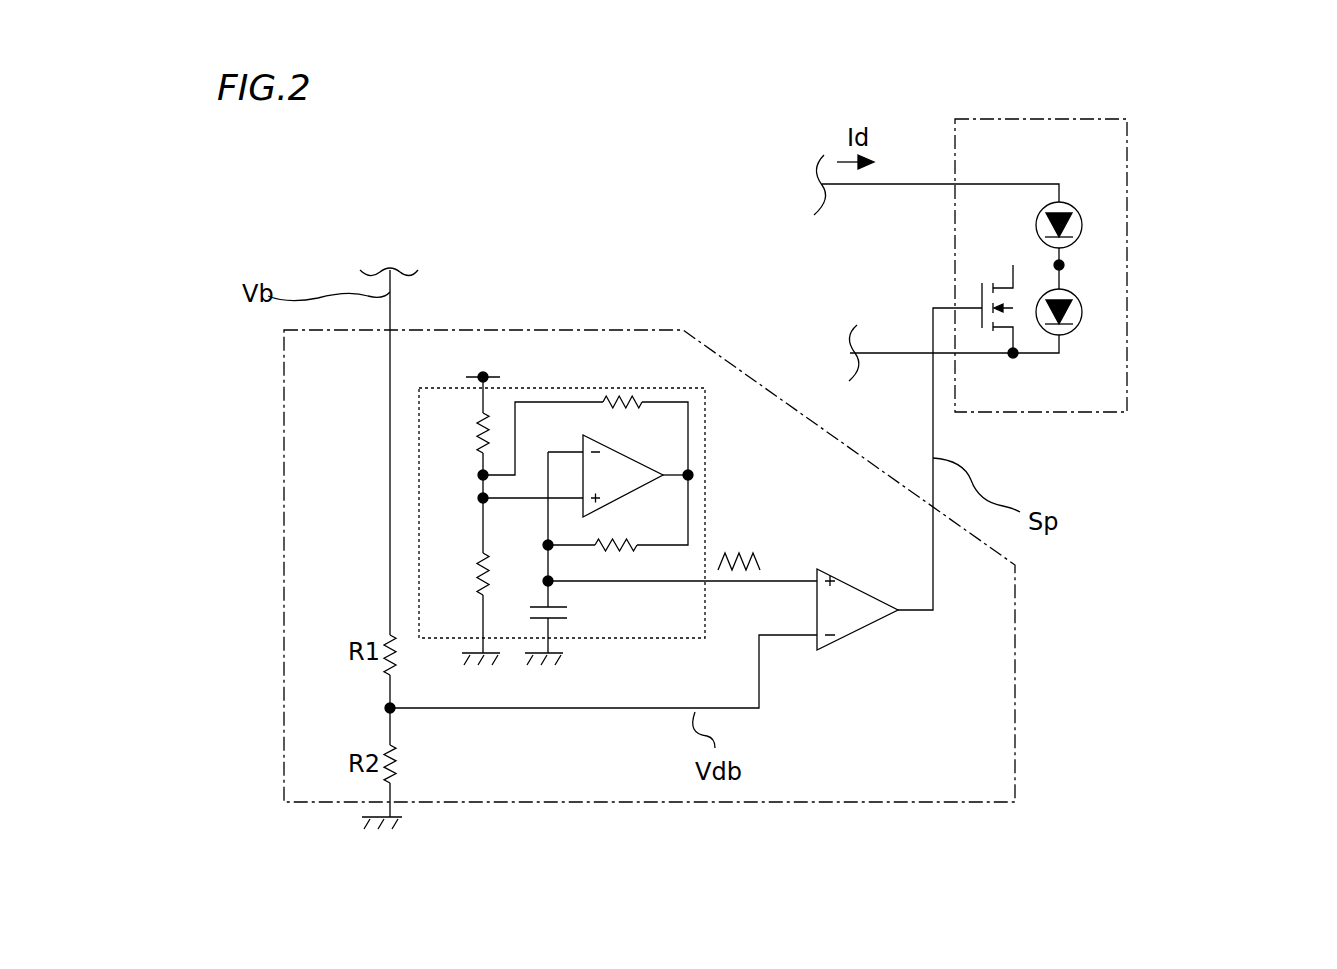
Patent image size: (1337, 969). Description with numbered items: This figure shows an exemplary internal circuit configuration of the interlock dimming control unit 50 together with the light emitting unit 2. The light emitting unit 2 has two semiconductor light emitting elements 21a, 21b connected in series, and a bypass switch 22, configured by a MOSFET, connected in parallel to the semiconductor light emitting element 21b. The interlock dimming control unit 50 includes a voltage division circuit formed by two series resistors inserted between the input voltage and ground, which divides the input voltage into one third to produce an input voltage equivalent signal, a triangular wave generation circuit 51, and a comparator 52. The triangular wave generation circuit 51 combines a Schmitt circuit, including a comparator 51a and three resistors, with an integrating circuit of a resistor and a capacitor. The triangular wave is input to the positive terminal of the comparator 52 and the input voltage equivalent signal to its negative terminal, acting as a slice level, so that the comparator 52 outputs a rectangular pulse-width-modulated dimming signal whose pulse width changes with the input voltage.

The light emitting unit 2 is at (1103, 119).
The semiconductor light emitting element 21a is at (1082, 228).
The semiconductor light emitting element 21b is at (1082, 312).
The bypass switch 22 is at (1022, 340).
The interlock dimming control unit 50 is at (1015, 772).
The triangular wave generation circuit 51 is at (592, 431).
The comparator 51a is at (648, 462).
The comparator 52 is at (875, 625).